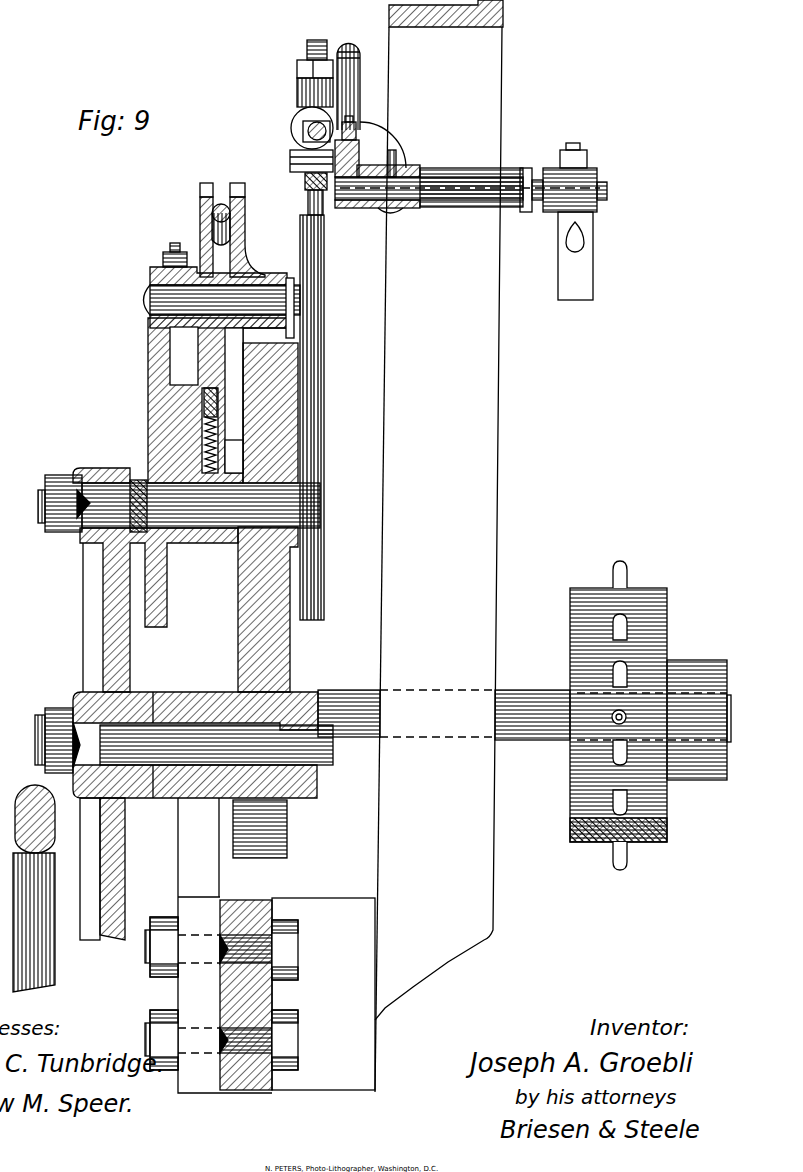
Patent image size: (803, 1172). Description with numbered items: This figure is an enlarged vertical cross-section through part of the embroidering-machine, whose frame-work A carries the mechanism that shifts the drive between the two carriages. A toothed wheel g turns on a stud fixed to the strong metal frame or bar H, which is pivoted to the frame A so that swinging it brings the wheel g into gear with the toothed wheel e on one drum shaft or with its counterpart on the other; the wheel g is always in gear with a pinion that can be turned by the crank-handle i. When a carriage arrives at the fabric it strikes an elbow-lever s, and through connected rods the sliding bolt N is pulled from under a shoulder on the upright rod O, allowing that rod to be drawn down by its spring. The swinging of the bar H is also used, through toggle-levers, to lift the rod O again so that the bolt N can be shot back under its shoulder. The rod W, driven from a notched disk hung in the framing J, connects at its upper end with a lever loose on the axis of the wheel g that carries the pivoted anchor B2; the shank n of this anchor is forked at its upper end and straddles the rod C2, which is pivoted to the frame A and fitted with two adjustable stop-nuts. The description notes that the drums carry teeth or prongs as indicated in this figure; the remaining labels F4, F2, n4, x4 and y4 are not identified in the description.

The frame-work A is at (439, 546).
The sliding bolt N is at (301, 134).
The crank-handle i is at (306, 194).
The elbow-lever s is at (467, 208).
The shank n is at (175, 234).
The rod C2 is at (232, 224).
The anchor B2 is at (222, 291).
The upright rod O is at (322, 417).
The pin n4 is at (293, 309).
The slide block F2 is at (217, 400).
The slot x4 is at (234, 400).
The slot y4 is at (234, 455).
The toothed wheel g is at (268, 517).
The frame or bar H is at (111, 741).
The framing J is at (207, 744).
The toothed wheel e is at (270, 829).
The rod W is at (34, 888).
The gear wheel F4 is at (613, 715).